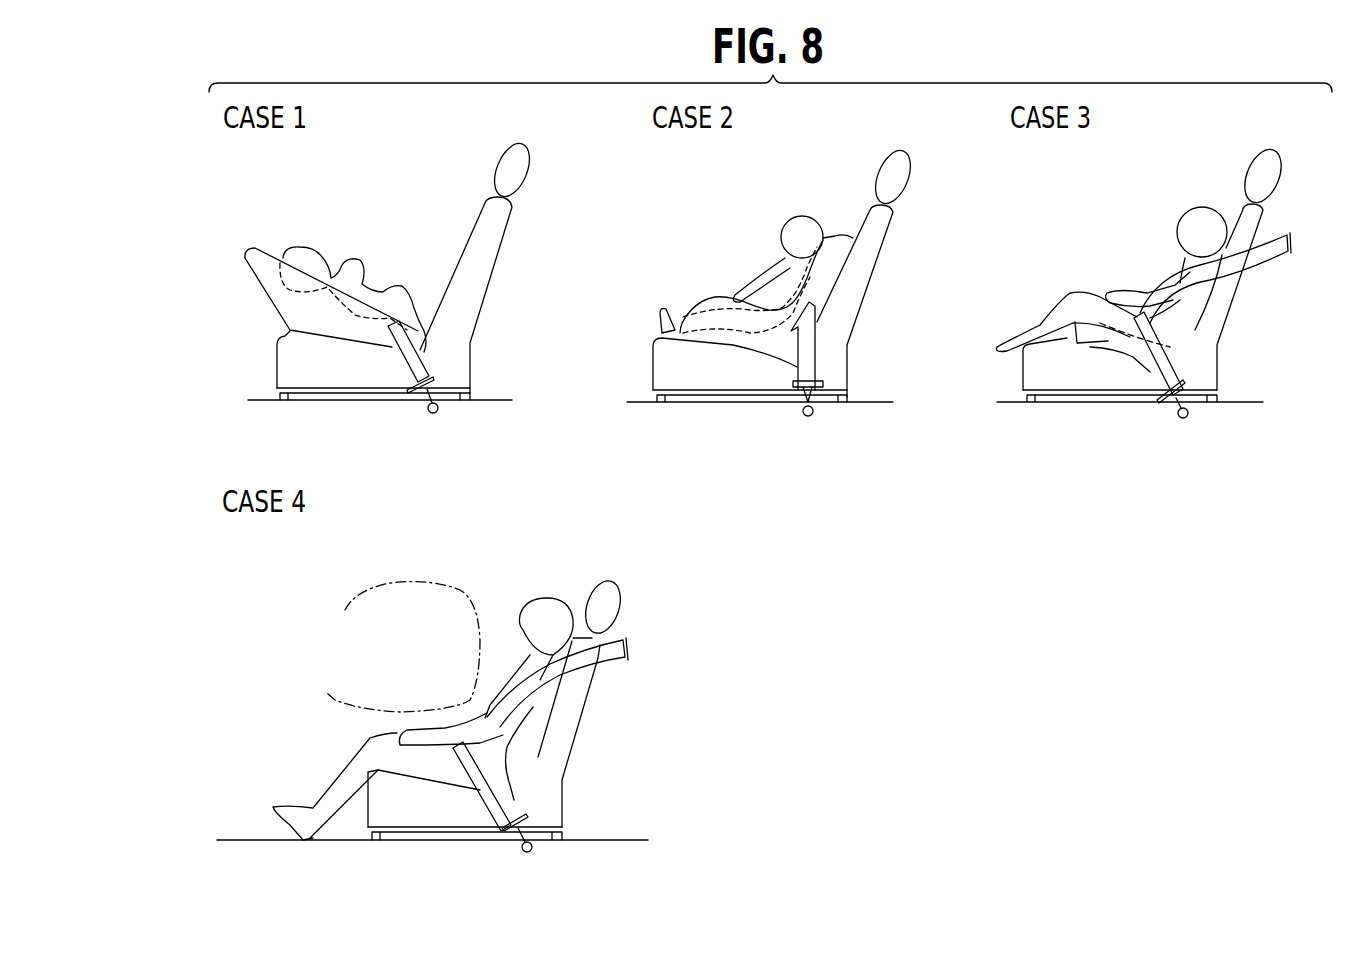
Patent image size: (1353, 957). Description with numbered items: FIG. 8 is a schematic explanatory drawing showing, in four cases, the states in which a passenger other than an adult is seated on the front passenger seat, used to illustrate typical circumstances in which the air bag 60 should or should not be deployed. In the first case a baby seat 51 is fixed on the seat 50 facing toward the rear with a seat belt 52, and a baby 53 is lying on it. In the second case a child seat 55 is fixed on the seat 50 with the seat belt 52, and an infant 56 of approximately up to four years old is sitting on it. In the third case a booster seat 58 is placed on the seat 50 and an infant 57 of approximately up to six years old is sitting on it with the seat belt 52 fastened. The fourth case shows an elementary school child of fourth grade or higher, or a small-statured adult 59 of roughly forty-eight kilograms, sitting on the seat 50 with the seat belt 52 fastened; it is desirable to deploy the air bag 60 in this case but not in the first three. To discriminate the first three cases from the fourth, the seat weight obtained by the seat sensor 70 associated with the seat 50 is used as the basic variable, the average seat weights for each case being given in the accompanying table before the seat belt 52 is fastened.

The seat 50 is at (510, 228).
The baby seat 51 is at (268, 248).
The seat belt 52 is at (420, 357).
The infant 53 is at (368, 256).
The child seat 55 is at (847, 237).
The infant 56 is at (760, 283).
The infant 57 is at (1087, 290).
The booster seat 58 is at (1170, 330).
The small-statured adult 59 is at (527, 738).
The air bag 60 is at (345, 610).
The seat sensor 70 is at (277, 397).